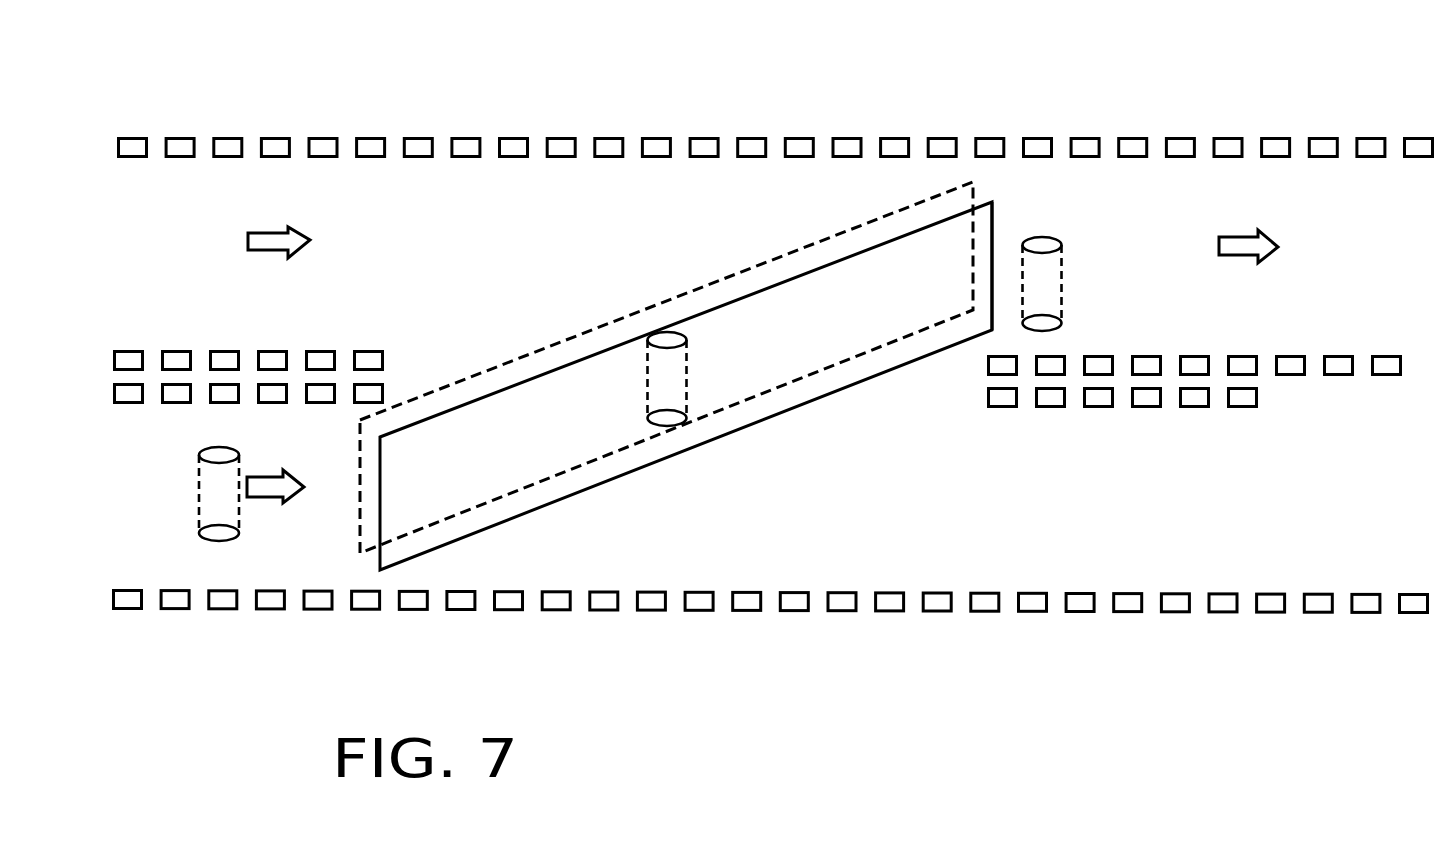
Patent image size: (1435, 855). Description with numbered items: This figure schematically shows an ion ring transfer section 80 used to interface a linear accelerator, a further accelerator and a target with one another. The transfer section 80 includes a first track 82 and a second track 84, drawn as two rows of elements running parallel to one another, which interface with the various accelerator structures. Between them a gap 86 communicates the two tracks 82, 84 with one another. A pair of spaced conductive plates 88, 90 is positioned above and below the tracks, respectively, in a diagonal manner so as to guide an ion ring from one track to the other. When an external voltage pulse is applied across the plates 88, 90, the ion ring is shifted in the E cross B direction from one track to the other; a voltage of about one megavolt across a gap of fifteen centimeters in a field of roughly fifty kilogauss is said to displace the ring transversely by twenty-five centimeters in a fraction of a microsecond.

The ring transfer section 80 is at (953, 727).
The first track 82 is at (1190, 188).
The second track 84 is at (1072, 554).
The gap 86 is at (917, 377).
The conductive plate 88 is at (992, 215).
The conductive plate 90 is at (918, 203).